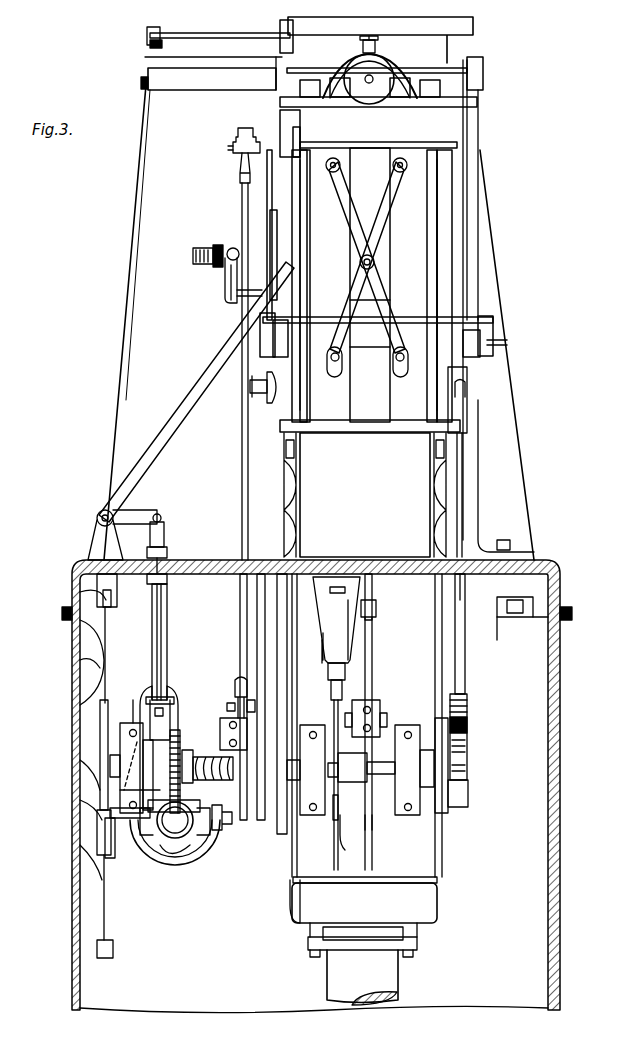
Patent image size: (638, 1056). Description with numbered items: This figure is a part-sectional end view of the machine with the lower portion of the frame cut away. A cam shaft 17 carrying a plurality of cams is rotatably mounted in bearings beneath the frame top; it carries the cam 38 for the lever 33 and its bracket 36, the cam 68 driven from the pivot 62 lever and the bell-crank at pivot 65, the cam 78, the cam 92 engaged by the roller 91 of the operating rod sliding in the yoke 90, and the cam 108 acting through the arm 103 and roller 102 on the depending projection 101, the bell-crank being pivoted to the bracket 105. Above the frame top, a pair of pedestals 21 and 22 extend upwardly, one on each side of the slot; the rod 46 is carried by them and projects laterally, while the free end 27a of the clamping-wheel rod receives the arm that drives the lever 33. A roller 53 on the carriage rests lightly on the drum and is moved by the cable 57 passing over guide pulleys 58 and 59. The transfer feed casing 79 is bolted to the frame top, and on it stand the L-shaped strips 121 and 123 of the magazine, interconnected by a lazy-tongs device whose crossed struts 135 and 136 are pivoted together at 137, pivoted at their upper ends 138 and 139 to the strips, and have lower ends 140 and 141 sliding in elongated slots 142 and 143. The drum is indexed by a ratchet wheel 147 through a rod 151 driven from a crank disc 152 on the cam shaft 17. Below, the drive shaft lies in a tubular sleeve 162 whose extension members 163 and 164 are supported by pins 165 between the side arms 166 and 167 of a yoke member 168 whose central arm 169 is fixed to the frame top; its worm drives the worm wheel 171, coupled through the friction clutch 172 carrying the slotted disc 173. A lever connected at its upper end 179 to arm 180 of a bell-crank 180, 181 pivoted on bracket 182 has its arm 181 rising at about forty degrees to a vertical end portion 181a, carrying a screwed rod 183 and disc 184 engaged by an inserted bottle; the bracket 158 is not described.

The cam shaft 17 is at (378, 762).
The pedestal 21 is at (485, 220).
The pedestal 22 is at (240, 187).
The free end of rod 27a is at (252, 128).
The lever 33 is at (250, 386).
The bracket 36 is at (222, 718).
The cam 38 is at (280, 835).
The rod 46 is at (190, 84).
The roller 53 is at (359, 92).
The cable 57 is at (134, 232).
The guide pulley 58 is at (146, 40).
The guide pulley 59 is at (142, 82).
The pivot 62 is at (78, 892).
The pivot 65 is at (100, 838).
The cam 68 is at (98, 706).
The cam 78 is at (262, 820).
The casing 79 is at (415, 508).
The yoke 90 is at (342, 625).
The roller 91 is at (344, 688).
The cam 92 is at (338, 812).
The depending projection 101 is at (372, 583).
The roller 102 is at (377, 604).
The arm 103 is at (373, 650).
The bracket 105 is at (380, 703).
The cam 108 is at (372, 818).
The L-shaped strip 121 is at (350, 273).
The L-shaped strip 123 is at (427, 273).
The strut 135 is at (350, 212).
The strut 136 is at (392, 316).
The pivot 137 is at (374, 258).
The upper end of strut 138 is at (333, 158).
The upper end of strut 139 is at (402, 158).
The lower end of strut 140 is at (402, 352).
The lower end of strut 141 is at (334, 352).
The elongated slot 142 is at (400, 377).
The elongated slot 143 is at (335, 377).
The ratchet wheel 147 is at (462, 460).
The rod 151 is at (466, 634).
The crank disc 152 is at (467, 755).
The bracket 158 is at (292, 830).
The tubular sleeve 162 is at (175, 838).
The extension member 163 is at (205, 862).
The extension member 164 is at (154, 858).
The pins 165 is at (150, 840).
The side arm 166 is at (226, 822).
The side arm 167 is at (112, 813).
The yoke member 168 is at (186, 662).
The central arm 169 is at (167, 612).
The worm wheel 171 is at (180, 740).
The friction clutch 172 is at (120, 750).
The disc 173 is at (119, 796).
The upper end of lever 179 is at (164, 522).
The bell-crank arm 180 is at (143, 510).
The bell-crank arm 181 is at (170, 402).
The vertical end portion 181a is at (226, 283).
The bracket 182 is at (95, 530).
The screwed rod 183 is at (204, 247).
The disc 184 is at (226, 300).